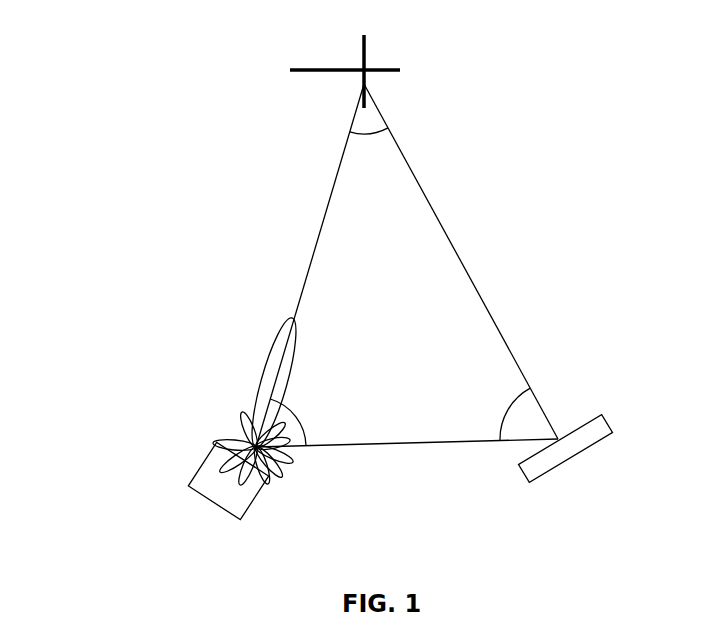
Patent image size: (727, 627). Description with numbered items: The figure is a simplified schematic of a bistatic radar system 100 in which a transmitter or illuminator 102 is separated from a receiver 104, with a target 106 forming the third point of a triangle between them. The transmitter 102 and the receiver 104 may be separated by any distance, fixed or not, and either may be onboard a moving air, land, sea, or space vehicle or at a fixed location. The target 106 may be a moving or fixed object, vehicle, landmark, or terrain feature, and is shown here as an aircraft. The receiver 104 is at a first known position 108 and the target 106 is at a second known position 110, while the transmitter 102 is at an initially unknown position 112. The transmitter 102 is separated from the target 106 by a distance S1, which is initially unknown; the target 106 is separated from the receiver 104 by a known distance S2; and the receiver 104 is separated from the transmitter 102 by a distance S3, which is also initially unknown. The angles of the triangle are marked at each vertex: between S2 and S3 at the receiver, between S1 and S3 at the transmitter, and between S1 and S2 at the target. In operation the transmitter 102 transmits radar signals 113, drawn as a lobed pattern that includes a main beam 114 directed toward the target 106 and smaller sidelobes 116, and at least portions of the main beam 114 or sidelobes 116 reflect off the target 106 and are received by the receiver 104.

The bistatic radar system 100 is at (130, 88).
The transmitter 102 is at (220, 510).
The receiver 104 is at (588, 450).
The target 106 is at (367, 66).
The first known position 108 is at (592, 406).
The second known position 110 is at (338, 42).
The initially unknown position 112 is at (261, 436).
The radar signals 113 is at (256, 382).
The main beam 114 is at (285, 360).
The sidelobes 116 is at (226, 424).
The distance S1 is at (313, 244).
The distance S2 is at (462, 246).
The distance S3 is at (412, 446).